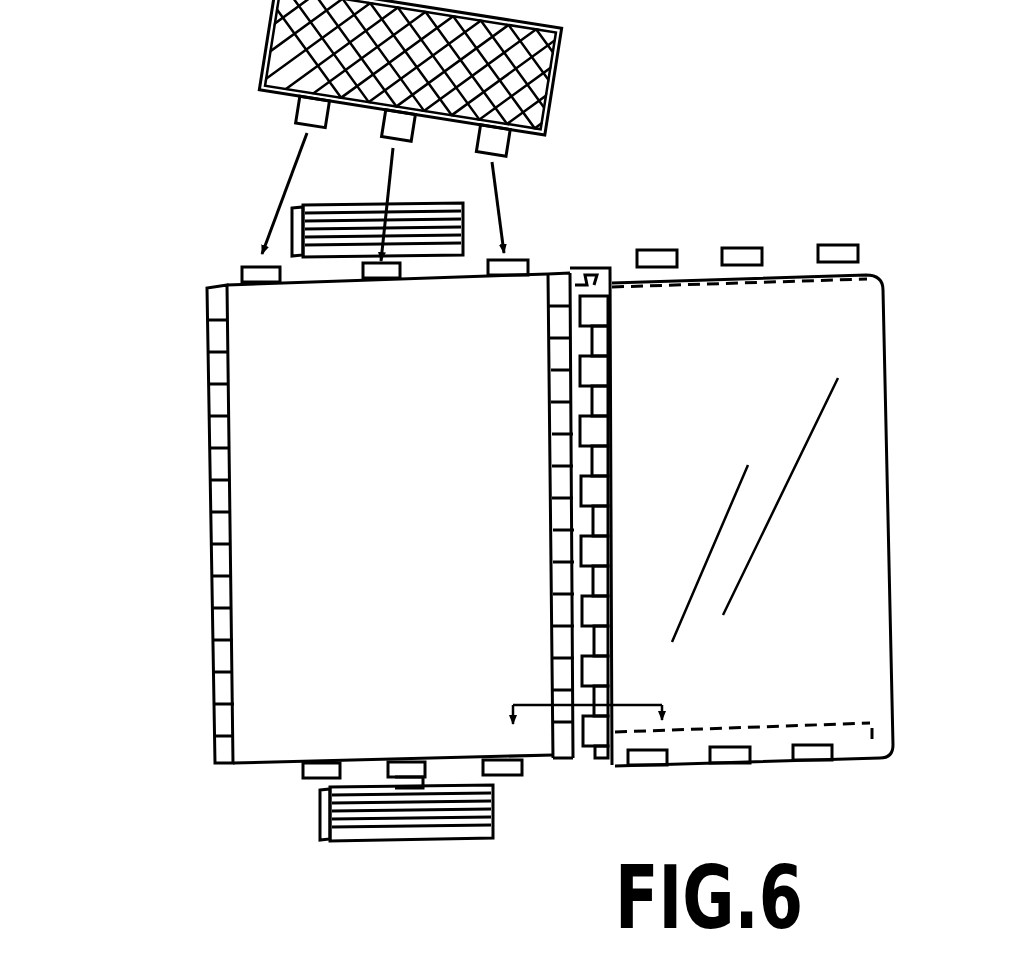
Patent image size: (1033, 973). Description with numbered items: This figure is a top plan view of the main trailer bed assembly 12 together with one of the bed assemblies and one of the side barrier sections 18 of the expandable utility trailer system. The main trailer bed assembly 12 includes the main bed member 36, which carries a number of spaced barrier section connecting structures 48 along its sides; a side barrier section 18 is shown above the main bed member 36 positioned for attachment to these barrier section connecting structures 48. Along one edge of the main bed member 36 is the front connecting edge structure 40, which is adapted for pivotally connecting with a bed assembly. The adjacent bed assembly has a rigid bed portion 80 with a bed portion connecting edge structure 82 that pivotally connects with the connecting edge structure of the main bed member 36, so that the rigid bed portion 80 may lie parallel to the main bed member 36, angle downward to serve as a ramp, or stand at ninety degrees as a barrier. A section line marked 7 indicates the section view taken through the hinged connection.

The side barrier section 18 is at (572, 59).
The barrier section connecting structure 48 is at (255, 282).
The main bed member 36 is at (432, 647).
The front connecting edge structure 40 is at (196, 547).
The main trailer bed assembly 12 is at (194, 726).
The bed portion connecting edge structure 82 is at (612, 423).
The rigid bed portion 80 is at (805, 665).
The section line 7- 7 is at (592, 773).